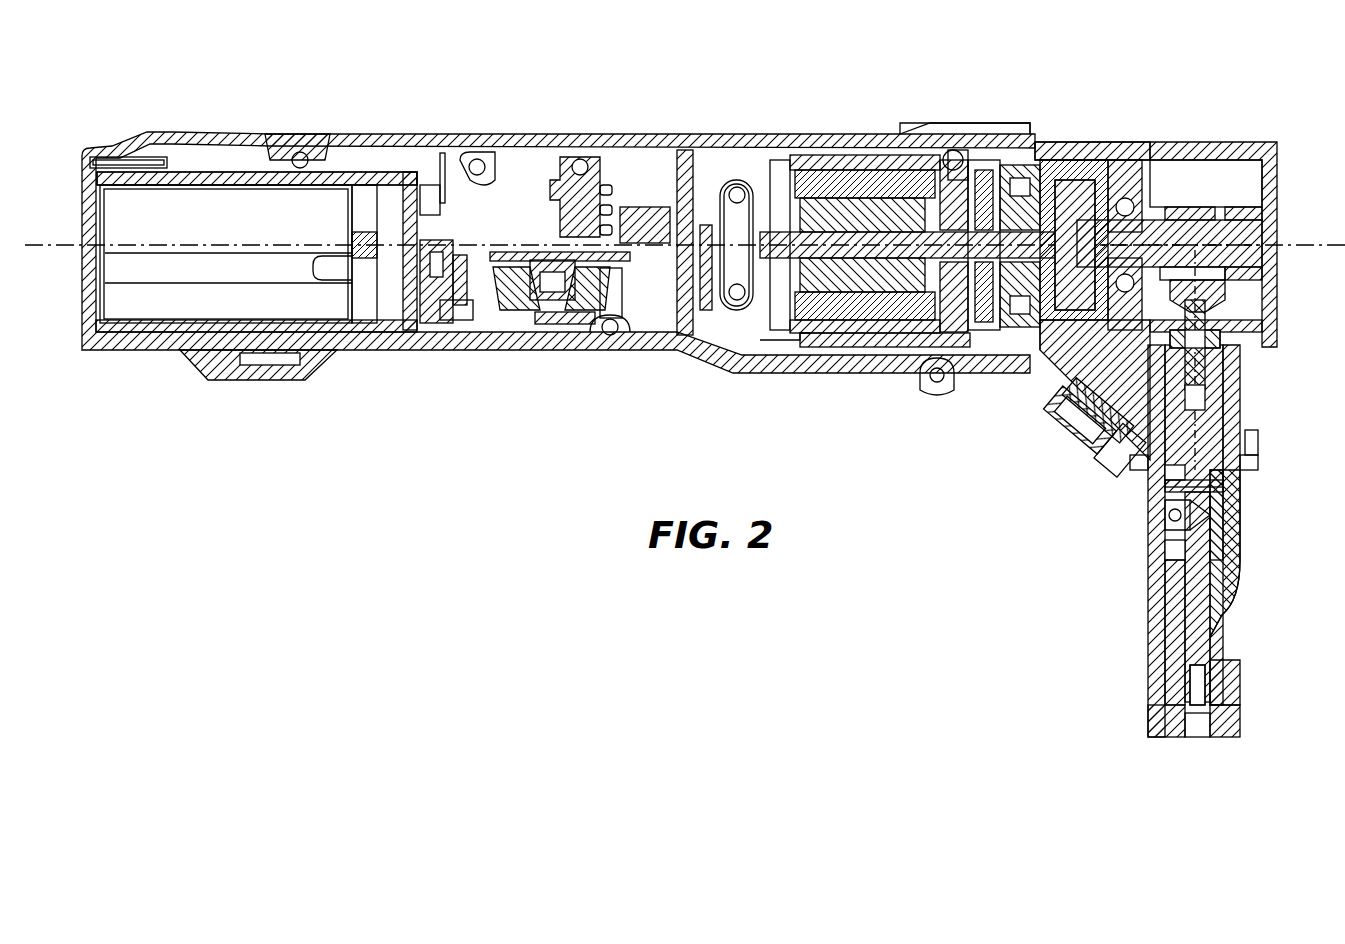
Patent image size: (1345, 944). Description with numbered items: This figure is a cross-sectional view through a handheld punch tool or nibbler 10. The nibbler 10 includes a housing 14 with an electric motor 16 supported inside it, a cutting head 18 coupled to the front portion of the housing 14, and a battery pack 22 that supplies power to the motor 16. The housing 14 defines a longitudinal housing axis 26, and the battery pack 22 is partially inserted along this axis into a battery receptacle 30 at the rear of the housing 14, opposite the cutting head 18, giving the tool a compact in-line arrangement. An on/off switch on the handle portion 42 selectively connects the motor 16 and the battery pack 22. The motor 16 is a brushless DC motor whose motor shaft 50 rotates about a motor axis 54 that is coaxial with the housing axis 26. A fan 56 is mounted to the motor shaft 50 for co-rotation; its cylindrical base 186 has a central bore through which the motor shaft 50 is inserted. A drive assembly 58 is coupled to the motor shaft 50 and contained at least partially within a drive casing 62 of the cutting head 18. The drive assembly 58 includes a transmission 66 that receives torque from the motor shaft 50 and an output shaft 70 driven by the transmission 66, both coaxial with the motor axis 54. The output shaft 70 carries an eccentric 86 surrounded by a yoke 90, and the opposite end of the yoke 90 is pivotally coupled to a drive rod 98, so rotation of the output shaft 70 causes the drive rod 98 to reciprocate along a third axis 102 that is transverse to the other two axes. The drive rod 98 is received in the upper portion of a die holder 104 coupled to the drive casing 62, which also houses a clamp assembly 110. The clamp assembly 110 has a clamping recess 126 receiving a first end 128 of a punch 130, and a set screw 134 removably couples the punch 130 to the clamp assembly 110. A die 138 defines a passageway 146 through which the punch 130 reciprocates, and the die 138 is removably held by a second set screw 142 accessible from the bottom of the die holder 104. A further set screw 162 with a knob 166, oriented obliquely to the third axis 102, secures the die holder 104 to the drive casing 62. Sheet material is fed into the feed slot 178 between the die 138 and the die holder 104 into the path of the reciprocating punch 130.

The punch tool 10 is at (575, 78).
The housing 14 is at (713, 357).
The electric motor 16 is at (853, 303).
The cutting head 18 is at (1156, 256).
The battery pack 22 is at (123, 340).
The housing axis 26 is at (192, 240).
The motor axis 54 is at (257, 178).
The battery receptacle 30 is at (277, 160).
The handle portion 42 is at (525, 340).
The motor shaft 50 is at (862, 215).
The fan 56 is at (953, 173).
The drive assembly 58 is at (1027, 118).
The drive casing 62 is at (1178, 135).
The transmission 66 is at (1077, 163).
The output shaft 70 is at (1262, 240).
The eccentric 86 is at (1223, 283).
The yoke 90 is at (1193, 210).
The drive rod 98 is at (1207, 407).
The third axis 102 is at (1258, 425).
The die holder 104 is at (1157, 647).
The clamp assembly 110 is at (1240, 523).
The clamping recess 126 is at (1233, 560).
The first end 128 is at (1190, 487).
The punch 130 is at (1197, 570).
The set screw 134 is at (1167, 517).
The die 138 is at (1230, 688).
The second set screw 142 is at (1197, 727).
The passageway 146 is at (1200, 698).
The set screw 162 is at (1077, 427).
The knob 166 is at (1087, 467).
The feed slot 178 is at (1243, 660).
The cylindrical base 186 is at (947, 327).